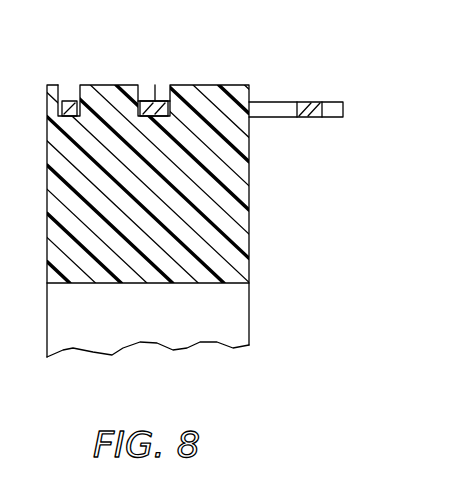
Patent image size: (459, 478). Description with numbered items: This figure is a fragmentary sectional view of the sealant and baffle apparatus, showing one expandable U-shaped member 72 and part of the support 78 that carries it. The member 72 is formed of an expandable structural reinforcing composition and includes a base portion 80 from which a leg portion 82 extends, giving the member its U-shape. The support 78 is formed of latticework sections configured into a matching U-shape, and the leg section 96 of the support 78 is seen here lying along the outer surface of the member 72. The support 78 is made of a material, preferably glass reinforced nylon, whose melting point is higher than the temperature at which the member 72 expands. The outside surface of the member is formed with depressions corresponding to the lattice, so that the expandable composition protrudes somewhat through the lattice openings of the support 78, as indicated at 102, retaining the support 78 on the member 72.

The expandable U-shaped member 72 is at (258, 195).
The leg portion 82 is at (232, 233).
The base portion 80 is at (230, 313).
The protruding expandable composition 102 is at (90, 95).
The leg section 96 is at (273, 108).
The support 78 is at (322, 84).